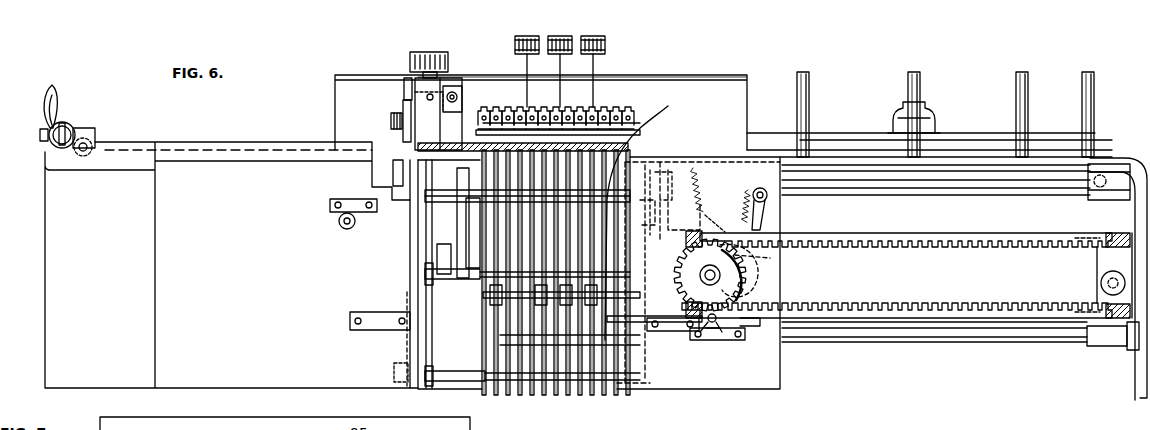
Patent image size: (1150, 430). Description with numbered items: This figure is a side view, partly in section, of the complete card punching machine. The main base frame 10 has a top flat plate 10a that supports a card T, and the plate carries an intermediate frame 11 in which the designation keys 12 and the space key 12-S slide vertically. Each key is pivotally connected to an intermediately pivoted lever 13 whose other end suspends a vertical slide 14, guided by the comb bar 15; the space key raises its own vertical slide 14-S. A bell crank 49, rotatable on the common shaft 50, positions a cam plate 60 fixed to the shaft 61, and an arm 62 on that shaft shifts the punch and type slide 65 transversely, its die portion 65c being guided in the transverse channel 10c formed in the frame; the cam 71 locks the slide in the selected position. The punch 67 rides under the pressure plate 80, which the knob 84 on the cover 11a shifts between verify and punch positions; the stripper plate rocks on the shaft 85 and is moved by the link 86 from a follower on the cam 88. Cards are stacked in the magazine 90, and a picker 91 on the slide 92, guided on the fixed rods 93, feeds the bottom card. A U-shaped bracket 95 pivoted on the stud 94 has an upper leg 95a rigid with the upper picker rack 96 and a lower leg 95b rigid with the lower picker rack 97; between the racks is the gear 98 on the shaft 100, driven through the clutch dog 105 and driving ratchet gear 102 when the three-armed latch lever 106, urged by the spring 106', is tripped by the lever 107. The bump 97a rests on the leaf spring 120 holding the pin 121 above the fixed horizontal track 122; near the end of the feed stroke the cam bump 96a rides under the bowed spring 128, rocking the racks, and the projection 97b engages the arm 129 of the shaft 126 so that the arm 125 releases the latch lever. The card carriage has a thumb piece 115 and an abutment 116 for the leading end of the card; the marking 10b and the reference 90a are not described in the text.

The main base frame 10 is at (255, 343).
The top flat plate 10a is at (315, 145).
The frame top plate 10b is at (213, 142).
The transverse channel 10c is at (393, 172).
The intermediate frame 11 is at (678, 96).
The cover 11a is at (618, 77).
The designation key 12 is at (568, 42).
The space key 12-S is at (522, 38).
The intermediately pivoted lever 13 is at (533, 108).
The vertical slide 14 is at (512, 125).
The space key vertical slide 14-S is at (502, 293).
The comb bar 15 is at (675, 27).
The bell crank 49 is at (500, 342).
The common shaft 50 is at (440, 282).
The cam plate 60 is at (605, 408).
The shaft 61 is at (443, 372).
The arm 62 is at (405, 291).
The punch and type slide 65 is at (438, 114).
The die portion 65c is at (393, 130).
The punch 67 is at (403, 102).
The cam 71 is at (432, 252).
The pressure plate 80 is at (404, 80).
The knob 84 is at (434, 60).
The shaft 85 is at (442, 92).
The link 86 is at (456, 115).
The cam 88 is at (460, 245).
The magazine 90 is at (1016, 95).
The rail 90a is at (755, 157).
The picker 91 is at (1110, 165).
The slide 92 is at (1100, 200).
The fixed rods 93 is at (965, 192).
The stud 94 is at (1100, 283).
The U-shaped bracket 95 is at (1105, 262).
The upper leg 95a is at (1073, 239).
The lower leg 95b is at (1077, 323).
The upper picker rack 96 is at (888, 236).
The cam bump 96a is at (700, 258).
The lower picker rack 97 is at (880, 312).
The bump 97a is at (755, 325).
The projection 97b is at (1126, 236).
The gear 98 is at (717, 275).
The shaft 100 is at (705, 281).
The driving ratchet gear 102 is at (758, 276).
The clutch dog 105 is at (772, 262).
The three-armed latch lever 106 is at (715, 198).
The spring 106' is at (719, 168).
The lever 107 is at (664, 180).
The thumb piece 115 is at (57, 100).
The abutment 116 is at (90, 137).
The leaf spring 120 is at (722, 340).
The pin 121 is at (710, 330).
The fixed horizontal track 122 is at (379, 324).
The arm 125 is at (761, 185).
The shaft 126 is at (768, 198).
The bowed spring 128 is at (341, 222).
The arm 129 is at (763, 214).
The card T is at (875, 155).